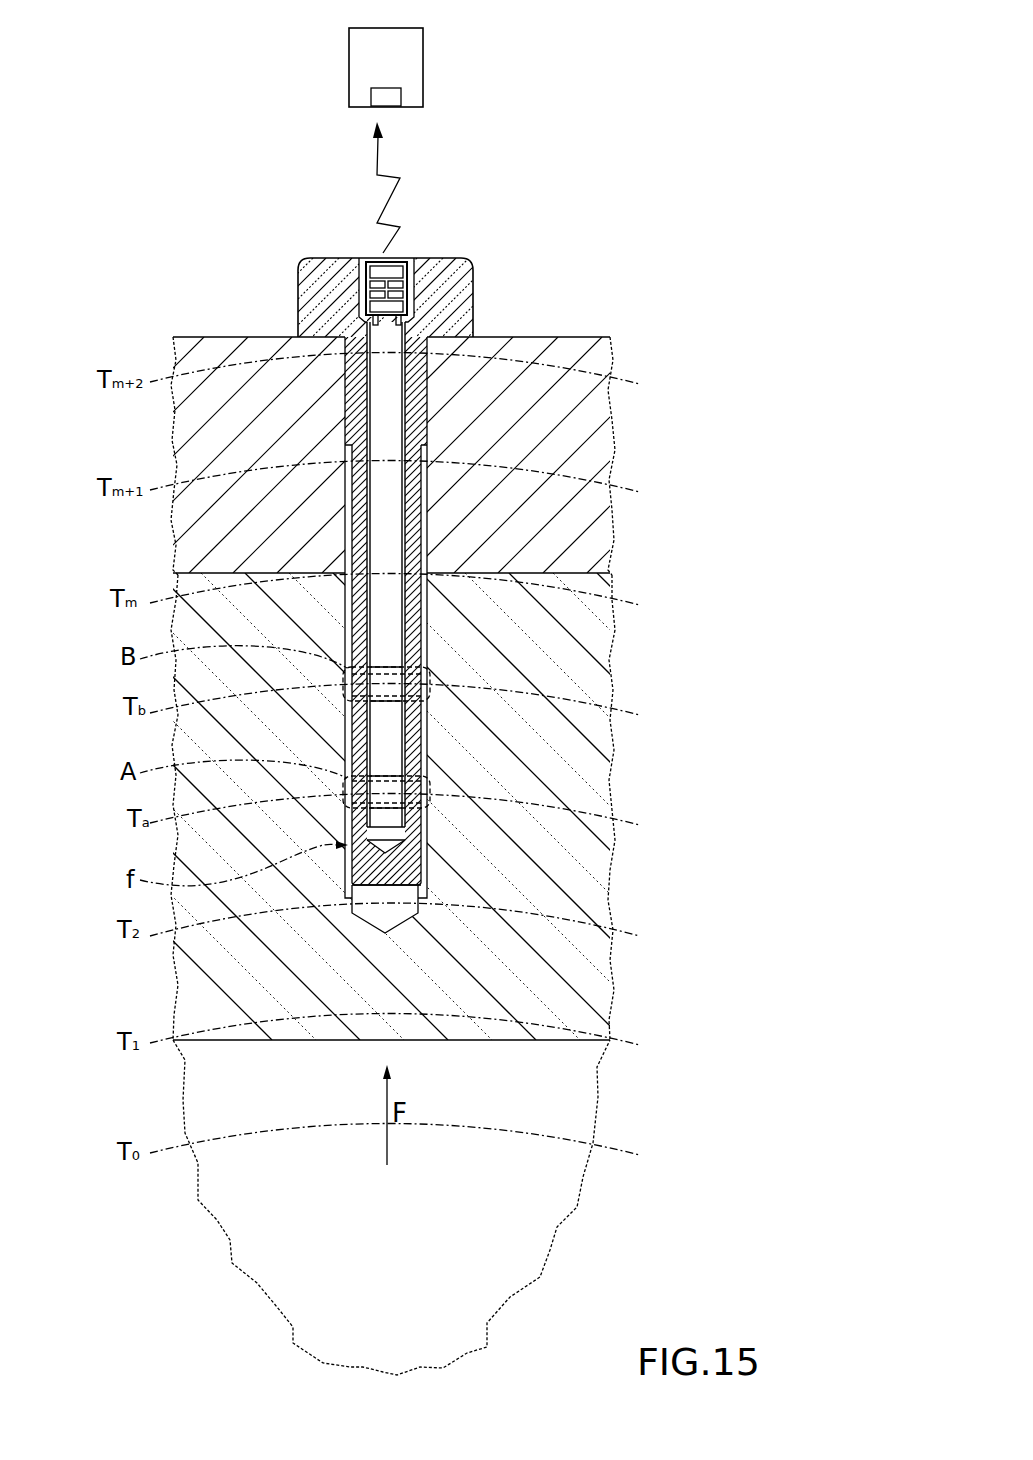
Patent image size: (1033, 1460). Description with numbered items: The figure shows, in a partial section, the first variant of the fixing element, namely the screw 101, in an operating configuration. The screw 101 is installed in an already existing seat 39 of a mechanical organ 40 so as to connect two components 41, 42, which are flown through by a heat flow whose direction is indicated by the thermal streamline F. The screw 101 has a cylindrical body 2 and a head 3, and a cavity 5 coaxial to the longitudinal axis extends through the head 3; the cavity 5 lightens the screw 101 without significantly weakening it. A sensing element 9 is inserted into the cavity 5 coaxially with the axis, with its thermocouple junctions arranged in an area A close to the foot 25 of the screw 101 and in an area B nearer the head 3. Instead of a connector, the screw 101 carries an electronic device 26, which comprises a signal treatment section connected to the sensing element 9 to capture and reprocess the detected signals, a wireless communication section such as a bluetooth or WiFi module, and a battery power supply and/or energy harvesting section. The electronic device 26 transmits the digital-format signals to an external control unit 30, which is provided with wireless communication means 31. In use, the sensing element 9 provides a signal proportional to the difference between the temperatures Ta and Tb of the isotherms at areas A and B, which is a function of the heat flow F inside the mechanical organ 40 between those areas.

The body 2 is at (423, 433).
The head 3 is at (462, 306).
The cavity 5 is at (388, 837).
The sensing element 9 is at (549, 598).
The foot 25 is at (428, 858).
The electronic device 26 is at (406, 253).
The external control unit 30 is at (438, 59).
The wireless communication means 31 is at (392, 95).
The seat 39 is at (342, 890).
The mechanical organ 40 is at (516, 818).
The first component 41 is at (575, 352).
The second component 42 is at (592, 625).
The screw 101 is at (486, 543).